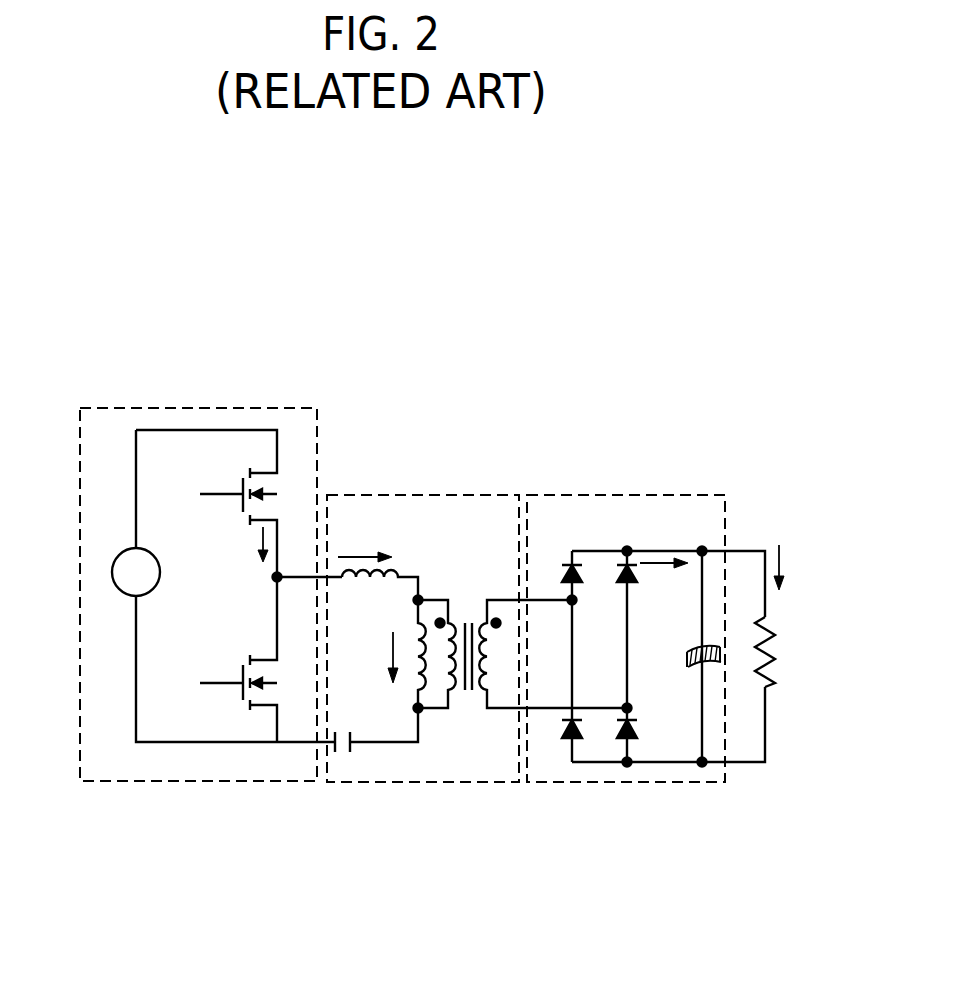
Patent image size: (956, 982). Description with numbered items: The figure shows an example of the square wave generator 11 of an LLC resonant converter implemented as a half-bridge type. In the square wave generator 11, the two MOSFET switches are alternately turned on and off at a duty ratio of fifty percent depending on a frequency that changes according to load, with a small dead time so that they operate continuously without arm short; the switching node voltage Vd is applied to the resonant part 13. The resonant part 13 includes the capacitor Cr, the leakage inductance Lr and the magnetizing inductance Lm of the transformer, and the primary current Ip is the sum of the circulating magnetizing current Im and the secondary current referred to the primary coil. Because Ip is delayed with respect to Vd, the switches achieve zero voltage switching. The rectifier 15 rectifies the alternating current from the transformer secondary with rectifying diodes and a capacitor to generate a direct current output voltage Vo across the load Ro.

The square wave generator 11 is at (197, 408).
The resonant part 13 is at (419, 494).
The rectifier 15 is at (624, 494).